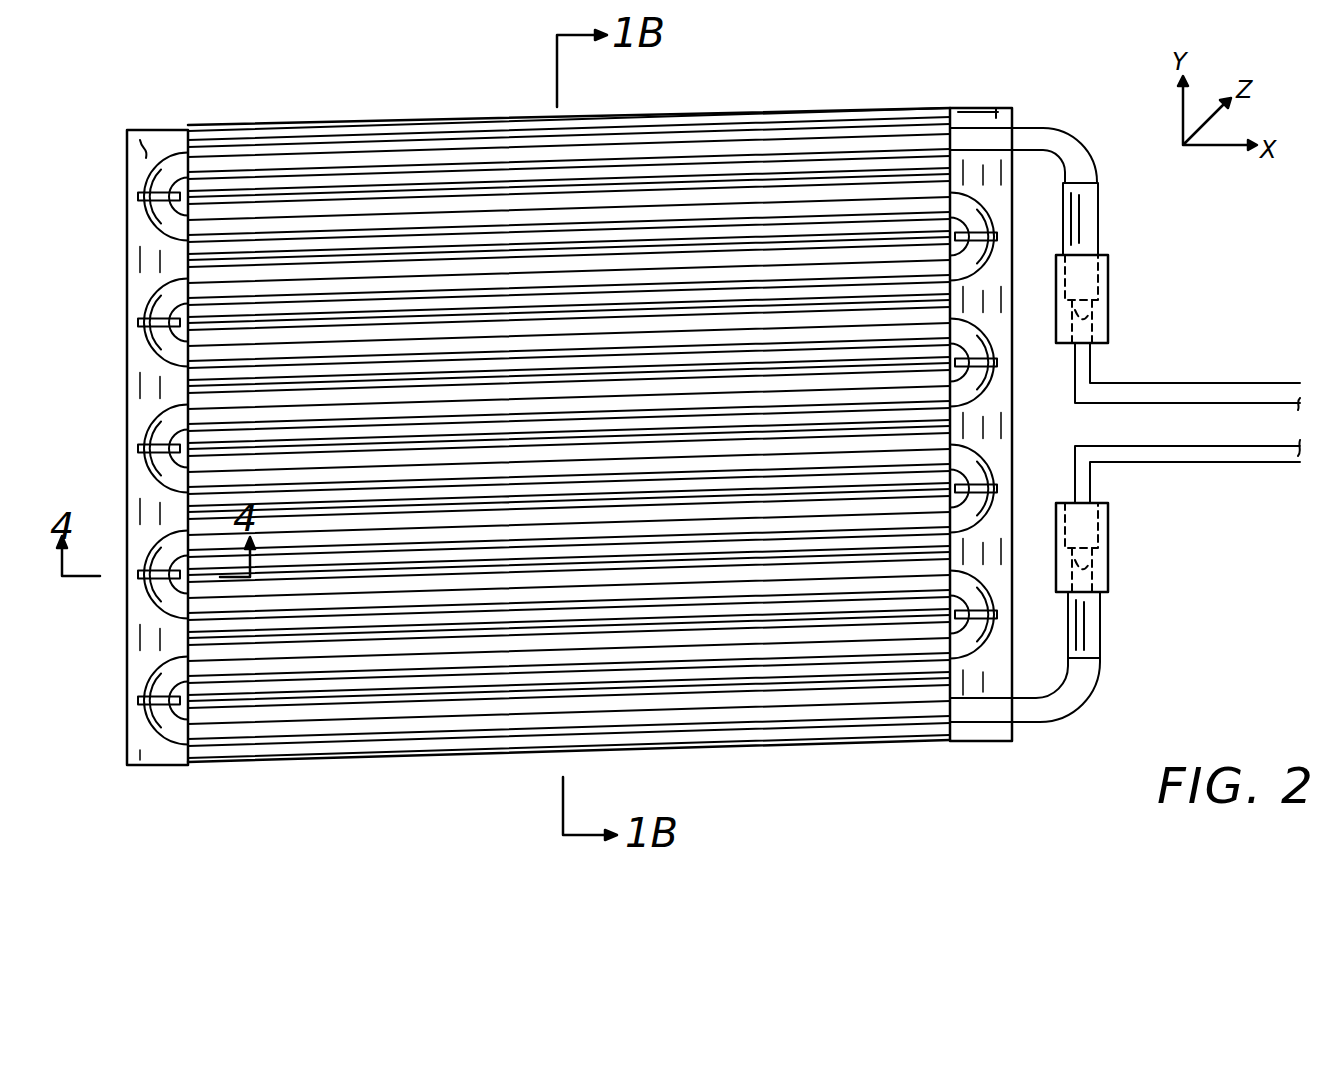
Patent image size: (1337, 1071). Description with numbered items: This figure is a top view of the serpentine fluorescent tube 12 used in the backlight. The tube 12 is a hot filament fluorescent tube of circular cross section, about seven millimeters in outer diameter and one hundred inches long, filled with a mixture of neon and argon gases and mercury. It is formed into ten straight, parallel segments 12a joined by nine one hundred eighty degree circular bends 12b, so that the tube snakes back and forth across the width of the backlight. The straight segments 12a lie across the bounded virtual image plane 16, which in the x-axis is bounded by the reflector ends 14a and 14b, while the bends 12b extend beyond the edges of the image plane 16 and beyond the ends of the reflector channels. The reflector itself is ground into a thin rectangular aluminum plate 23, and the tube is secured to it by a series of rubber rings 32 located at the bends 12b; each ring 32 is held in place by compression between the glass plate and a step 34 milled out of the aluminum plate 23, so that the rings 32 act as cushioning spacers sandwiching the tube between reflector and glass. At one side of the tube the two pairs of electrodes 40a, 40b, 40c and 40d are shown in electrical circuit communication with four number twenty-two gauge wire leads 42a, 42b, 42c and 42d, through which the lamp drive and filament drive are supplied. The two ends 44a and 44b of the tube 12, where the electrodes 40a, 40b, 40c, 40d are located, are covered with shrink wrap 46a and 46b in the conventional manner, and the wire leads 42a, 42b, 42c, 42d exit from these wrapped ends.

The serpentine fluorescent tube 12 is at (756, 732).
The straight parallel segments 12a is at (845, 145).
The circular bends 12b is at (152, 345).
The reflector end 14a is at (186, 130).
The reflector end 14b is at (956, 108).
The image plane 16 is at (478, 120).
The aluminum plate 23 is at (250, 128).
The rubber rings 32 is at (150, 300).
The step 34 is at (145, 150).
The electrode 40a is at (1110, 306).
The electrode 40b is at (1110, 318).
The electrode 40c is at (1110, 522).
The electrode 40d is at (1110, 540).
The wire lead 42a is at (1234, 384).
The wire lead 42b is at (1247, 402).
The wire lead 42c is at (1267, 448).
The wire lead 42d is at (1252, 464).
The tube end 44a is at (1110, 292).
The tube end 44b is at (1110, 566).
The shrink wrap 46a is at (1108, 255).
The shrink wrap 46b is at (1108, 592).